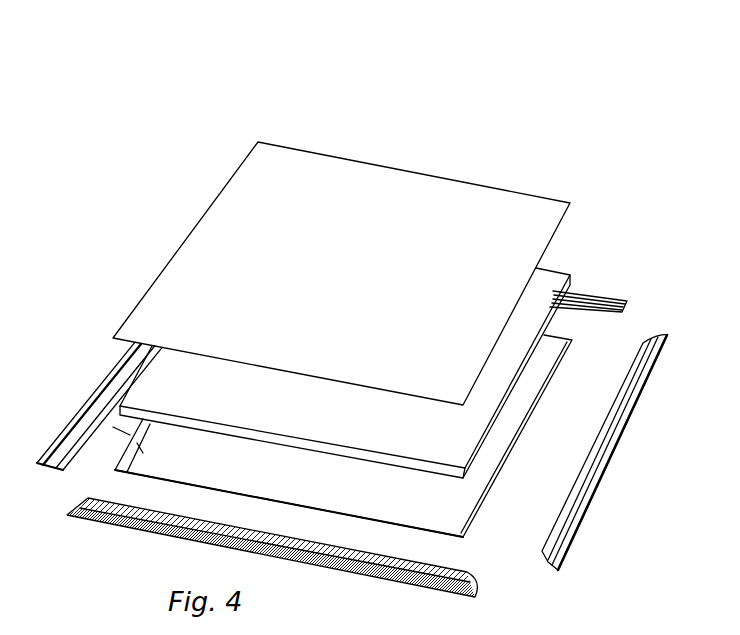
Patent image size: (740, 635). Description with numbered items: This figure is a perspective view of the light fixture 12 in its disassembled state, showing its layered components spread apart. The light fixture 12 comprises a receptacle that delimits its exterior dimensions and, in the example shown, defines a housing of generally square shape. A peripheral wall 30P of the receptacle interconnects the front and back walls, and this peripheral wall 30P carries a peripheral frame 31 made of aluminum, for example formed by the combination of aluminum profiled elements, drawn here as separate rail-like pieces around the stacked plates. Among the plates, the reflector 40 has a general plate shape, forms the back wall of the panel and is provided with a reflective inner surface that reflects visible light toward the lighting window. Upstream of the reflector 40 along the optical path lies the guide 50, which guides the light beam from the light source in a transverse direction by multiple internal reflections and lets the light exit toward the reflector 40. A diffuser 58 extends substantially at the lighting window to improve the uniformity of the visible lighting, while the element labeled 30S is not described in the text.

The light fixture 12 is at (205, 98).
The top plate 30S is at (390, 200).
The reflector 40 is at (226, 250).
The guide 50 is at (185, 365).
The diffuser 58 is at (76, 414).
The peripheral frame 31 is at (620, 433).
The peripheral wall 30P is at (607, 463).